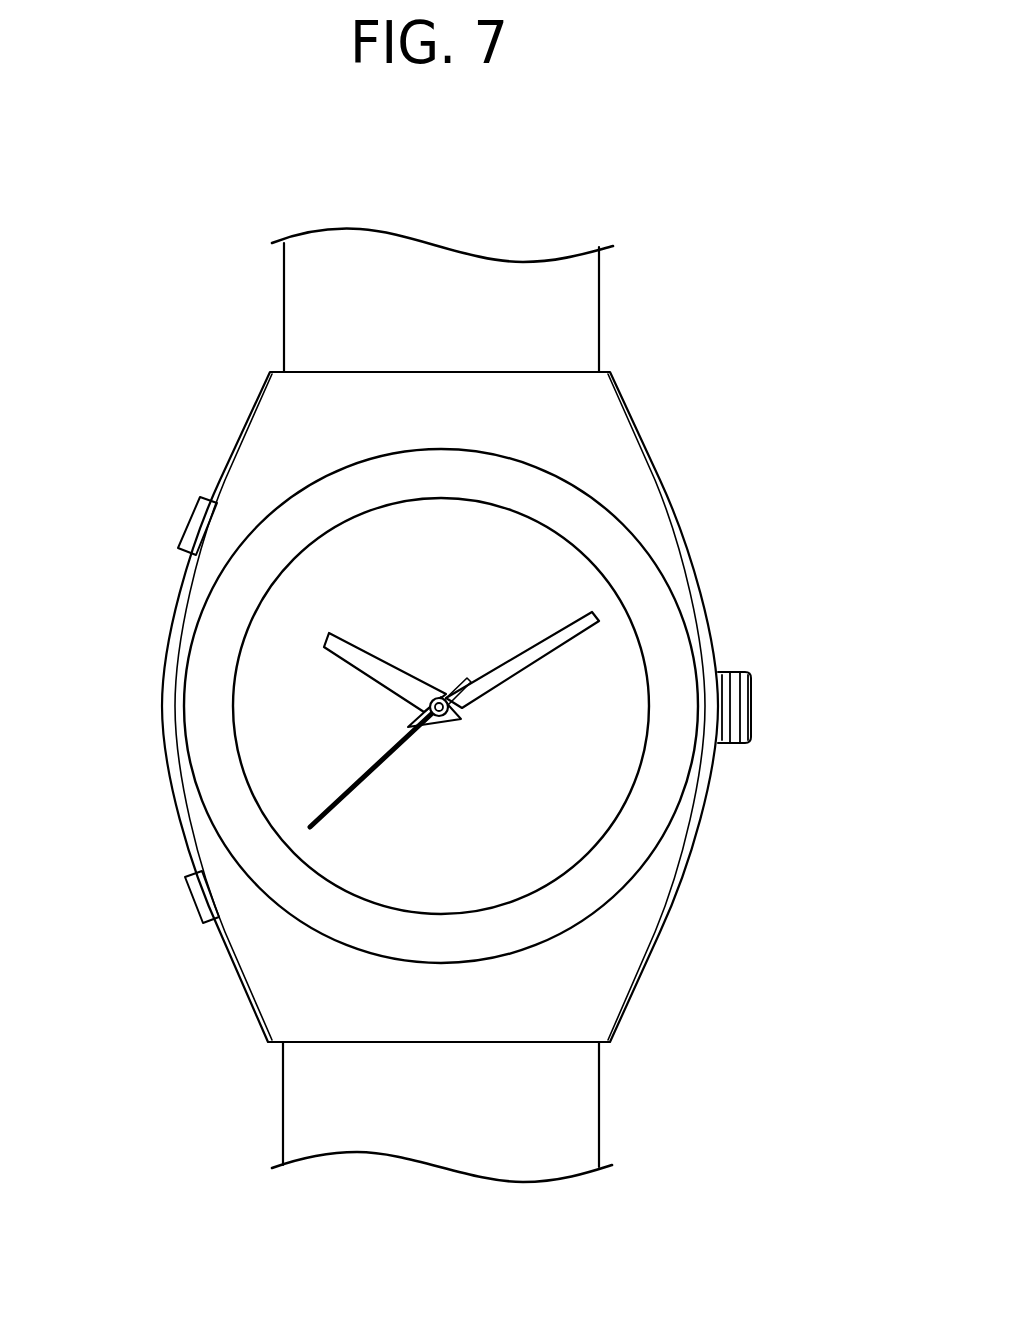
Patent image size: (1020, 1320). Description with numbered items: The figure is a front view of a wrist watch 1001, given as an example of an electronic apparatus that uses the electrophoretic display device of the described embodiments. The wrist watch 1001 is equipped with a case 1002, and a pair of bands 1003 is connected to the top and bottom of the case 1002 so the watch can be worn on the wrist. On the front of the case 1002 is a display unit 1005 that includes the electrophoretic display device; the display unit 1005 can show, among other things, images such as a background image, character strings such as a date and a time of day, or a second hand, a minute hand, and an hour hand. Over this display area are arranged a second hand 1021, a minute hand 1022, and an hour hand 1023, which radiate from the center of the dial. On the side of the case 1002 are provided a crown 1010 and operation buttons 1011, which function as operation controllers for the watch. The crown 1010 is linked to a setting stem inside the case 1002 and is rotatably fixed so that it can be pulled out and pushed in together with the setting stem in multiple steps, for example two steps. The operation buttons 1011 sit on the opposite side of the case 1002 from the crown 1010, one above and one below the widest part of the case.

The wrist watch 1001 is at (770, 517).
The case 1002 is at (650, 467).
The bands 1003 is at (599, 313).
The display unit 1005 is at (610, 665).
The crown 1010 is at (751, 707).
The operation buttons 1011 is at (192, 520).
The second hand 1021 is at (314, 825).
The minute hand 1022 is at (597, 617).
The hour hand 1023 is at (330, 637).